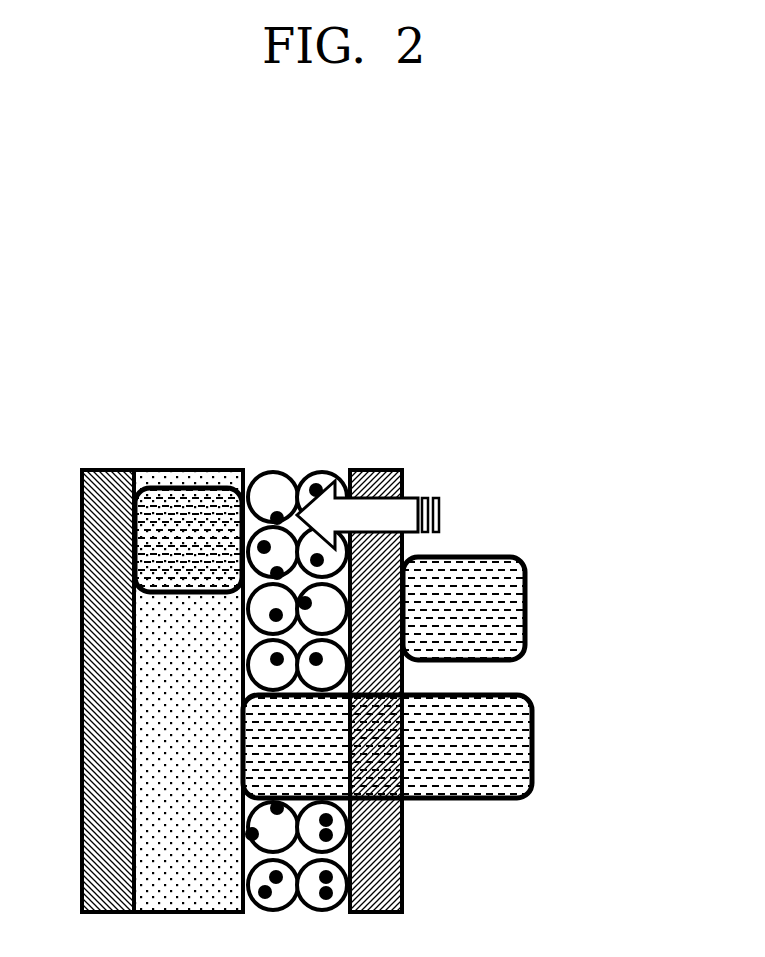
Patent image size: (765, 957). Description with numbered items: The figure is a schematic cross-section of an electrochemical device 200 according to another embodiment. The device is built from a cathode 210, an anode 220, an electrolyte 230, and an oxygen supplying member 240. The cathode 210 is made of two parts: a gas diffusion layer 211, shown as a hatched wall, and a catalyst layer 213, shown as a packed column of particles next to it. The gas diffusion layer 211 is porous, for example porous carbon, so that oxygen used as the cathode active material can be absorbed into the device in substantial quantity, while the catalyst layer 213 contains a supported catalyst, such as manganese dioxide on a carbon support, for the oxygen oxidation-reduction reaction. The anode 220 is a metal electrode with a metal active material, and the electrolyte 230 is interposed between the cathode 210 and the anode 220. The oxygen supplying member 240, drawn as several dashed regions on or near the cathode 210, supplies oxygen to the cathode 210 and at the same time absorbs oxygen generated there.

The electrochemical device 200 is at (250, 260).
The cathode 210 is at (262, 352).
The gas diffusion layer 211 is at (377, 472).
The catalyst layer 213 is at (273, 472).
The anode 220 is at (108, 470).
The electrolyte 230 is at (187, 472).
The oxygen supplying member 240 is at (190, 490).